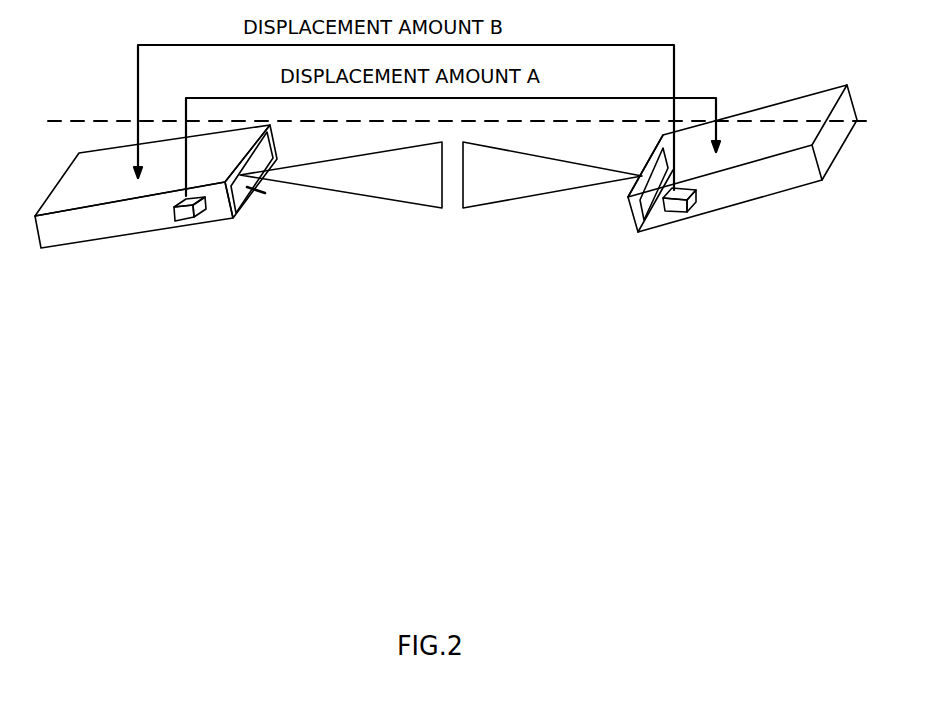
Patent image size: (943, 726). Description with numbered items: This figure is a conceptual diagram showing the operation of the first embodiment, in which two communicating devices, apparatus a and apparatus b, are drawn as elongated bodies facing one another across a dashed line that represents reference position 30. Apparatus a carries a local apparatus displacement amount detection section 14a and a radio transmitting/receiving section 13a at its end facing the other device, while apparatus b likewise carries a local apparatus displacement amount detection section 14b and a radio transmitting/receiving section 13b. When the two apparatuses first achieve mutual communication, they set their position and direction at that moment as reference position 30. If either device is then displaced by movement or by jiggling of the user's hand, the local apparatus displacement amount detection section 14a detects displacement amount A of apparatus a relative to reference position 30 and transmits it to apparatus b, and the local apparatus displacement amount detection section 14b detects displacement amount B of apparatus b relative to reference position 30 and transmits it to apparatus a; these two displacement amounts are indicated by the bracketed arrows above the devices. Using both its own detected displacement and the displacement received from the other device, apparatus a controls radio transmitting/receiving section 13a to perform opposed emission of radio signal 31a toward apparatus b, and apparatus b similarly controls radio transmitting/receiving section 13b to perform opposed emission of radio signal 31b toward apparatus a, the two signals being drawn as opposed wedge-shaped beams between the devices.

The reference position 30 is at (73, 118).
The apparatus a is at (63, 230).
The apparatus b is at (805, 173).
The radio transmitting/receiving section 13a is at (255, 190).
The radio transmitting/receiving section 13b is at (642, 205).
The local apparatus displacement amount detection section 14a is at (203, 220).
The local apparatus displacement amount detection section 14b is at (680, 212).
The radio signal 31a is at (403, 188).
The radio signal 31b is at (489, 195).